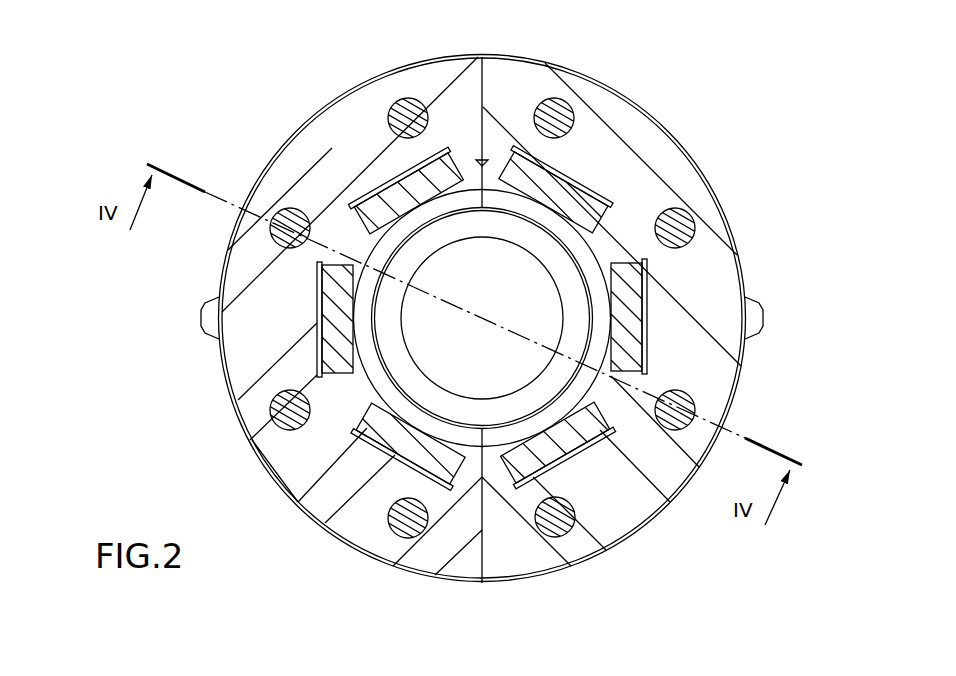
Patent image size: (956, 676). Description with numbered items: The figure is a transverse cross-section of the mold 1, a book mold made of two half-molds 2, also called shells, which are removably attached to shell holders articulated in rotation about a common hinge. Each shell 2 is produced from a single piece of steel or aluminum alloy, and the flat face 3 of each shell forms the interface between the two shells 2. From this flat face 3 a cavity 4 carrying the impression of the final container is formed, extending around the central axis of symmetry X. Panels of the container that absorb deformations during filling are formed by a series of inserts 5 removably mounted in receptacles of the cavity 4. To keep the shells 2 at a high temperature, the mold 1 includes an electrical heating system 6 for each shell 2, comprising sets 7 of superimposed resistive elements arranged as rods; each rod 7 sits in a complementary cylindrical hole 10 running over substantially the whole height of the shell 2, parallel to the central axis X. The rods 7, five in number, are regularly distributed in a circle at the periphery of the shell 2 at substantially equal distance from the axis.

The mold 1 is at (652, 110).
The half-mold 2 is at (308, 142).
The flat face 3 is at (486, 76).
The cavity 4 is at (510, 286).
The insert 5 is at (402, 195).
The electrical heating system 6 is at (396, 102).
The set of resistive elements (rod) 7 is at (408, 118).
The cylindrical hole 10 is at (577, 100).